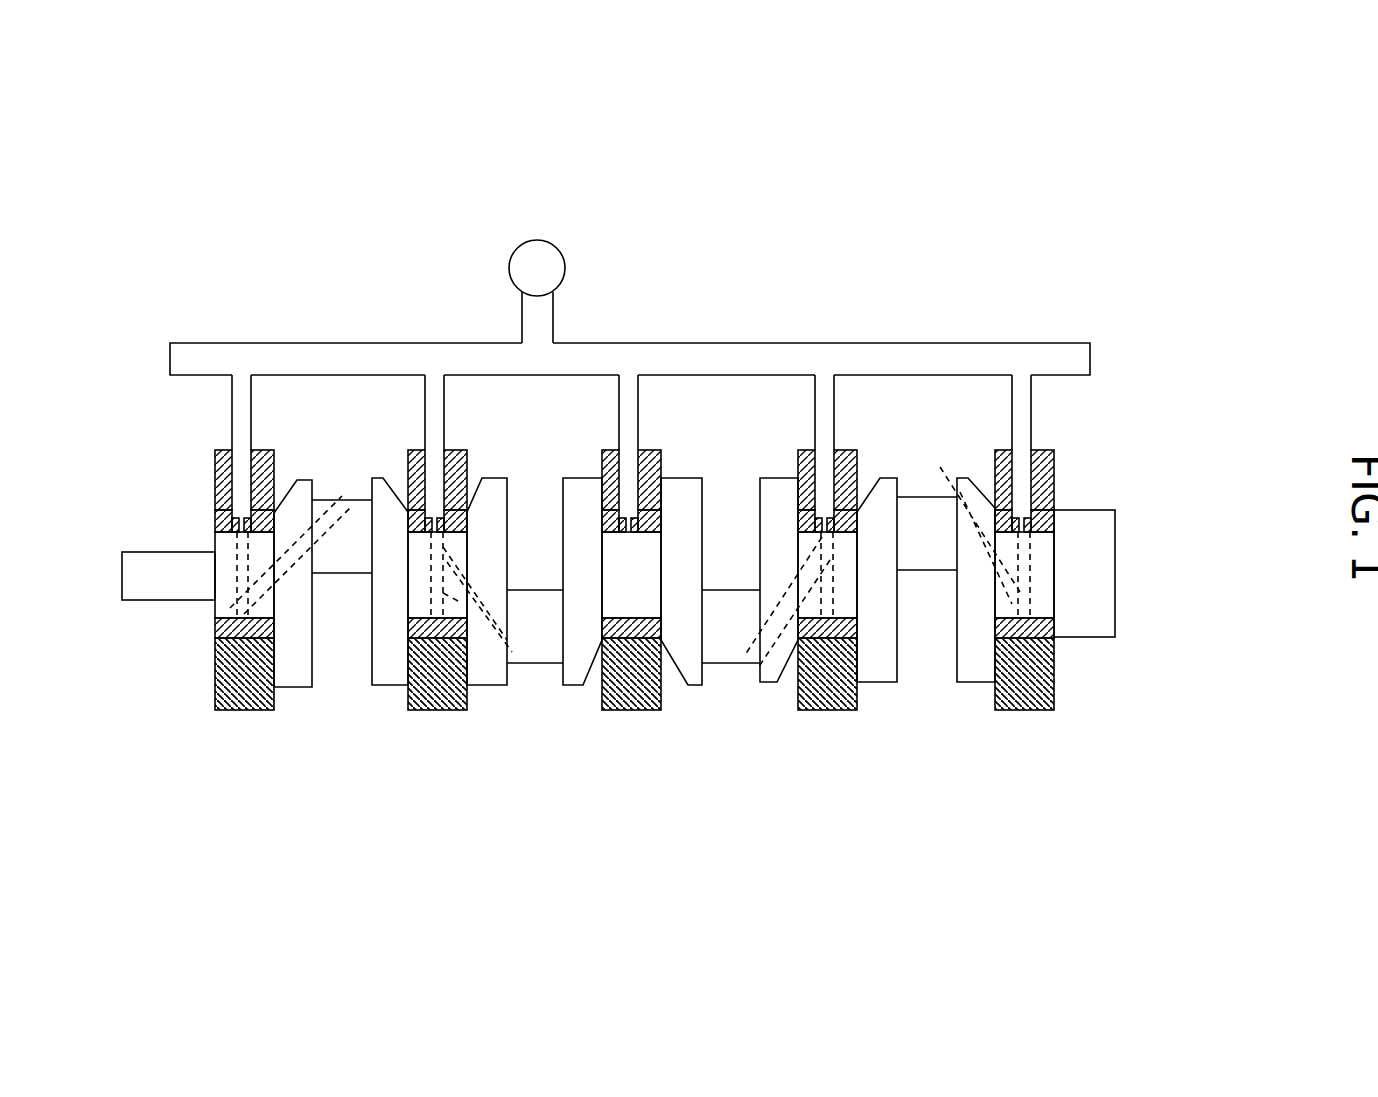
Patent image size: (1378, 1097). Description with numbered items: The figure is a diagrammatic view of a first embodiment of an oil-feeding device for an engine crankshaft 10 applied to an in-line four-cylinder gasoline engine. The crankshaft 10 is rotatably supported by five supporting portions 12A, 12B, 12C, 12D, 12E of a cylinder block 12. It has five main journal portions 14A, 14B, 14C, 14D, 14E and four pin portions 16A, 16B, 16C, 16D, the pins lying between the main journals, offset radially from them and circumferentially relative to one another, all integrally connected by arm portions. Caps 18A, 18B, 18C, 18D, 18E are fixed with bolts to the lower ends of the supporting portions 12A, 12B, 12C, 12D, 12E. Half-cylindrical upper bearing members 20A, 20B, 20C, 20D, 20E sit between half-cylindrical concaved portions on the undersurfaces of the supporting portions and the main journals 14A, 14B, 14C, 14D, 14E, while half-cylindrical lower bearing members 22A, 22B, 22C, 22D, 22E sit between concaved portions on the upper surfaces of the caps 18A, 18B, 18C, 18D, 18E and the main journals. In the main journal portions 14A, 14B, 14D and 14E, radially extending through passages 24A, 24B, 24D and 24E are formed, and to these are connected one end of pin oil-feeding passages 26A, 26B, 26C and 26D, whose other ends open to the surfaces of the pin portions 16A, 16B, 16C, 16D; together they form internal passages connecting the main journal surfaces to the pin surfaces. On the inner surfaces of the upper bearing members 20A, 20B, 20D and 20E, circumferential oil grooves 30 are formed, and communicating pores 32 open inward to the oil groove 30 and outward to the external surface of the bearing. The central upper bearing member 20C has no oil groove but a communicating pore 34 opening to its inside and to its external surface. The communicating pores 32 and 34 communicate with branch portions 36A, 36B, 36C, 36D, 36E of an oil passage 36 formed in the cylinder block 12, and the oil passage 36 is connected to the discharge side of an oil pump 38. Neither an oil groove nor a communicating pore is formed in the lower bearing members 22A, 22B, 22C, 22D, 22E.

The engine crankshaft 10 is at (146, 532).
The cylinder block 12 is at (1067, 468).
The supporting portion 12A is at (222, 455).
The supporting portion 12B is at (410, 455).
The supporting portion 12C is at (608, 455).
The supporting portion 12D is at (803, 456).
The supporting portion 12E is at (995, 458).
The main journal portion 14A is at (218, 598).
The main journal portion 14B is at (410, 598).
The main journal portion 14C is at (612, 600).
The main journal portion 14D is at (850, 598).
The main journal portion 14E is at (1045, 607).
The pin portion 16A is at (343, 565).
The pin portion 16B is at (535, 593).
The pin portion 16C is at (735, 593).
The pin portion 16D is at (928, 578).
The cap 18A is at (240, 712).
The cap 18B is at (433, 712).
The cap 18C is at (630, 712).
The cap 18D is at (826, 712).
The cap 18E is at (1026, 712).
The upper bearing member 20A is at (222, 514).
The upper bearing member 20B is at (467, 514).
The upper bearing member 20C is at (660, 514).
The upper bearing member 20D is at (856, 514).
The upper bearing member 20E is at (1054, 513).
The lower bearing member 22A is at (226, 660).
The lower bearing member 22B is at (420, 660).
The lower bearing member 22C is at (662, 660).
The lower bearing member 22D is at (860, 660).
The lower bearing member 22E is at (1054, 640).
The through passage 24A is at (232, 608).
The through passage 24B is at (455, 597).
The through passage 24D is at (790, 610).
The through passage 24E is at (1030, 562).
The pin oil-feeding passage 26A is at (343, 492).
The pin oil-feeding passage 26B is at (500, 640).
The pin oil-feeding passage 26C is at (752, 668).
The pin oil-feeding passage 26D is at (960, 518).
The oil groove 30 is at (818, 528).
The communicating pore 32 is at (243, 514).
The communicating pore 34 is at (636, 532).
The oil passage 36 is at (980, 350).
The branch portion 36A is at (232, 392).
The branch portion 36B is at (440, 400).
The branch portion 36C is at (628, 410).
The branch portion 36D is at (828, 405).
The branch portion 36E is at (1030, 402).
The oil pump 38 is at (566, 270).